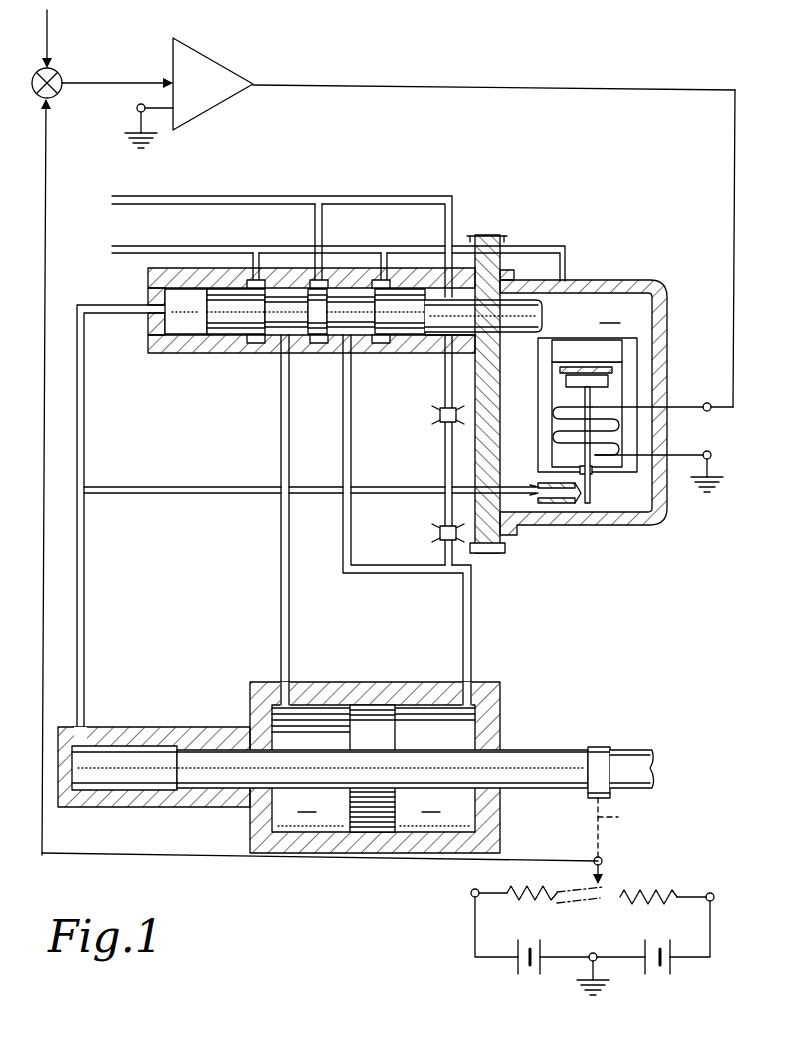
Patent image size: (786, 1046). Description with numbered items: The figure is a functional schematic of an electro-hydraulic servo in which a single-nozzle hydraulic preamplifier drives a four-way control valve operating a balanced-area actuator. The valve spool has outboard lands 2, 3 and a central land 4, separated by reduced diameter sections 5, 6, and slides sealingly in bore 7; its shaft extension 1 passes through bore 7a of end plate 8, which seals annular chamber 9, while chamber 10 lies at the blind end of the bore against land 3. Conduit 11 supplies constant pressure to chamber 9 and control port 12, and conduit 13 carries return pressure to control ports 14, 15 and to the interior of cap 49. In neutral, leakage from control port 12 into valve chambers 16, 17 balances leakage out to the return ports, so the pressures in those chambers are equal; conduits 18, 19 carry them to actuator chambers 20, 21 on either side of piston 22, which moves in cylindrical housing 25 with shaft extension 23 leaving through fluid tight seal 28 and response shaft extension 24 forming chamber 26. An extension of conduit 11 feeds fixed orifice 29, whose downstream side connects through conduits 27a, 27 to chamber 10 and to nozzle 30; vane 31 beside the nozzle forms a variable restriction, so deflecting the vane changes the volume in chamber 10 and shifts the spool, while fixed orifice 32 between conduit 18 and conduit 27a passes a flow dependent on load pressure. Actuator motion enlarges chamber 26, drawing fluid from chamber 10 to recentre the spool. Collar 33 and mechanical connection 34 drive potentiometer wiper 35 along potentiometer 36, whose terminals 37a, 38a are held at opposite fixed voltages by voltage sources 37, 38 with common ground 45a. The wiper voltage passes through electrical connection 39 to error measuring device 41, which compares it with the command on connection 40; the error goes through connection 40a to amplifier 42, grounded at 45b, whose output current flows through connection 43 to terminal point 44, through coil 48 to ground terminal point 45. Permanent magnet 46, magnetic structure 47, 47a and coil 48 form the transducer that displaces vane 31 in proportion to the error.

The shaft extension 1 is at (528, 318).
The outboard land 2 is at (402, 300).
The outboard land 3 is at (230, 300).
The central land 4 is at (316, 300).
The reduced diameter section 5 is at (350, 302).
The reduced diameter section 6 is at (285, 300).
The bore 7 is at (152, 256).
The bore 7a is at (500, 350).
The end plate 8 is at (488, 262).
The chamber 9 is at (428, 338).
The chamber 10 is at (176, 322).
The conduit 11 is at (240, 200).
The control port 12 is at (318, 346).
The conduit 13 is at (204, 246).
The control port 14 is at (380, 346).
The control port 15 is at (252, 344).
The valve chamber 16 is at (352, 340).
The valve chamber 17 is at (277, 340).
The conduit 18 is at (344, 573).
The conduit 19 is at (280, 522).
The actuator chamber 20 is at (432, 720).
The actuator chamber 21 is at (290, 742).
The piston 22 is at (372, 730).
The shaft extension 23 is at (640, 758).
The shaft extension 24 is at (205, 750).
The cylindrical housing 25 is at (320, 712).
The chamber 26 is at (130, 775).
The conduit 27 is at (84, 420).
The conduit 27a is at (378, 490).
The fluid tight seal 28 is at (500, 800).
The fixed orifice 29 is at (438, 422).
The nozzle 30 is at (560, 505).
The vane 31 is at (592, 496).
The orifice 32 is at (438, 537).
The collar 33 is at (600, 748).
The mechanical connection 34 is at (618, 817).
The potentiometer wiper 35 is at (603, 872).
The potentiometer 36 is at (628, 893).
The voltage source 37 is at (516, 974).
The potentiometer terminal 37a is at (471, 893).
The voltage source 38 is at (648, 974).
The potentiometer terminal 38a is at (714, 895).
The electrical connection 39 is at (167, 860).
The electrical connection 40 is at (50, 40).
The connection 40a is at (105, 82).
The error measuring device 41 is at (38, 96).
The amplifier 42 is at (208, 98).
The connection 43 is at (652, 92).
The terminal point 44 is at (711, 411).
The terminal point 45 is at (711, 455).
The common ground connection 45a is at (591, 953).
The common ground connection 45b is at (137, 108).
The permanent magnet 46 is at (600, 334).
The magnetic structure 47 is at (543, 397).
The magnetic structure 47a is at (624, 466).
The coil 48 is at (560, 438).
The cap 49 is at (660, 282).